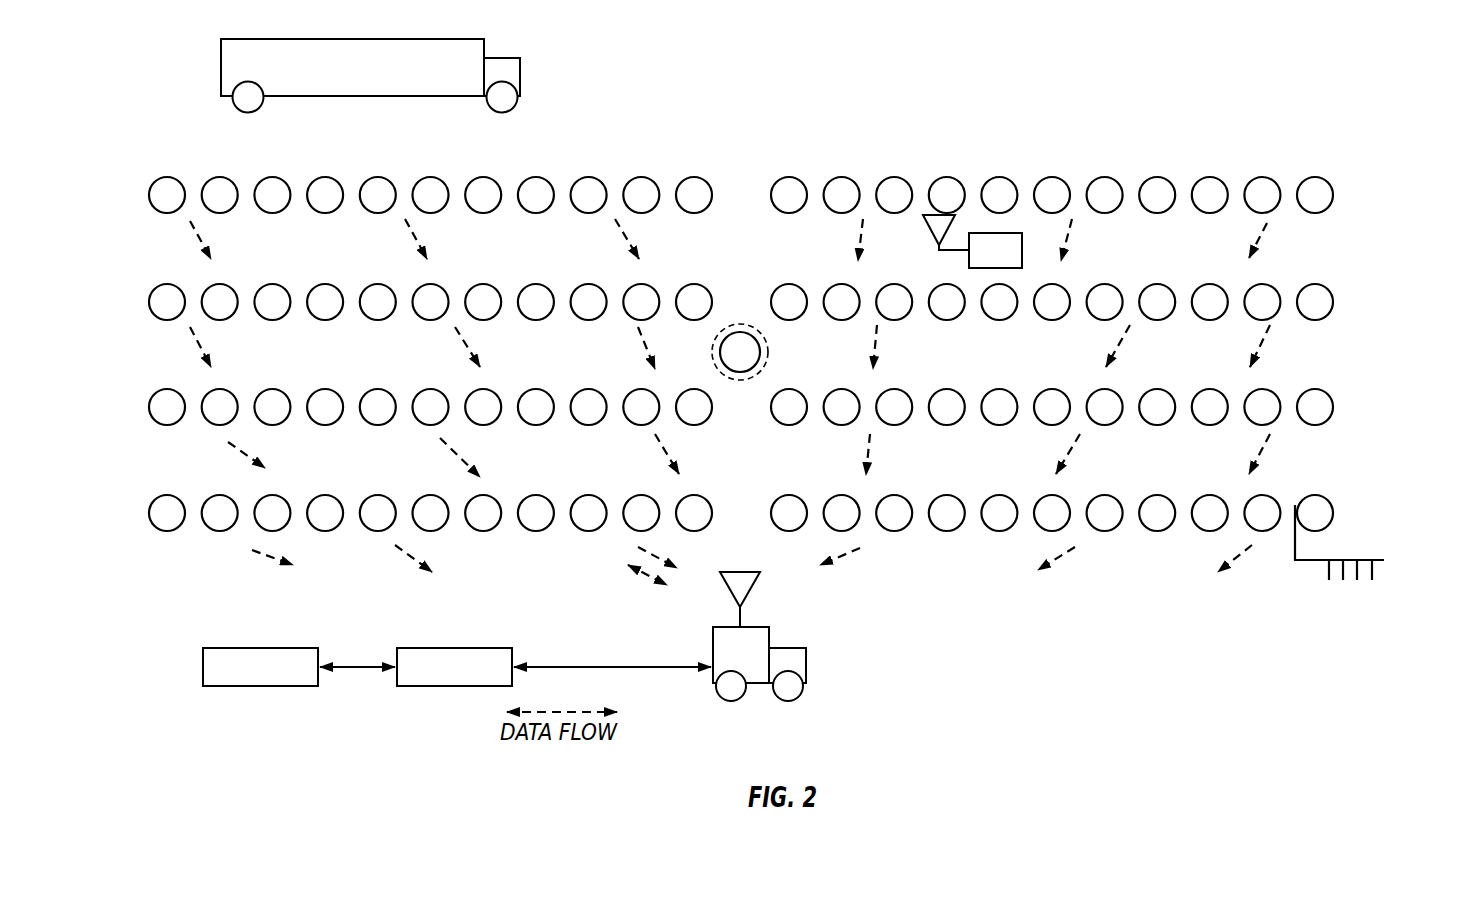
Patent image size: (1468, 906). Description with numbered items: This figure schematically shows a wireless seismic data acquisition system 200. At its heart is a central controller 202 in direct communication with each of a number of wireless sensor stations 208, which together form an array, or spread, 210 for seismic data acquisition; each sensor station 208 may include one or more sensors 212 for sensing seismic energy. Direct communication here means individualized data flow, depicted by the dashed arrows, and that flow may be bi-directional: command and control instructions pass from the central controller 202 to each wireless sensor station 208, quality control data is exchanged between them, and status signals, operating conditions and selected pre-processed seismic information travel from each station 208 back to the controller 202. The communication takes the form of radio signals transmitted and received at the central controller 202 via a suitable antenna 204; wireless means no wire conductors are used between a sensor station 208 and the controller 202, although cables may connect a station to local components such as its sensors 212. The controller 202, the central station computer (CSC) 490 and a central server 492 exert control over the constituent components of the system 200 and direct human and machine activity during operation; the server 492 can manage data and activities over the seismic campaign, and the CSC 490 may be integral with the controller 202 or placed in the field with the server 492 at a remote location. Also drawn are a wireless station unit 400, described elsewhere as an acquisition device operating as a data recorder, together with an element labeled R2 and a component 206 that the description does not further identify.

The wireless station unit 400 is at (520, 73).
The array (spread) 210 is at (764, 325).
The wireless sensor station 208 is at (1312, 178).
The reader antenna R2 is at (972, 241).
The tagged container (selected) 206 is at (767, 342).
The antenna 204 is at (760, 573).
The central controller 202 is at (807, 663).
The central station computer (CSC) 490 is at (428, 648).
The central server 492 is at (217, 648).
The sensor 212 is at (1384, 578).
The wireless seismic data acquisition system 200 is at (764, 383).